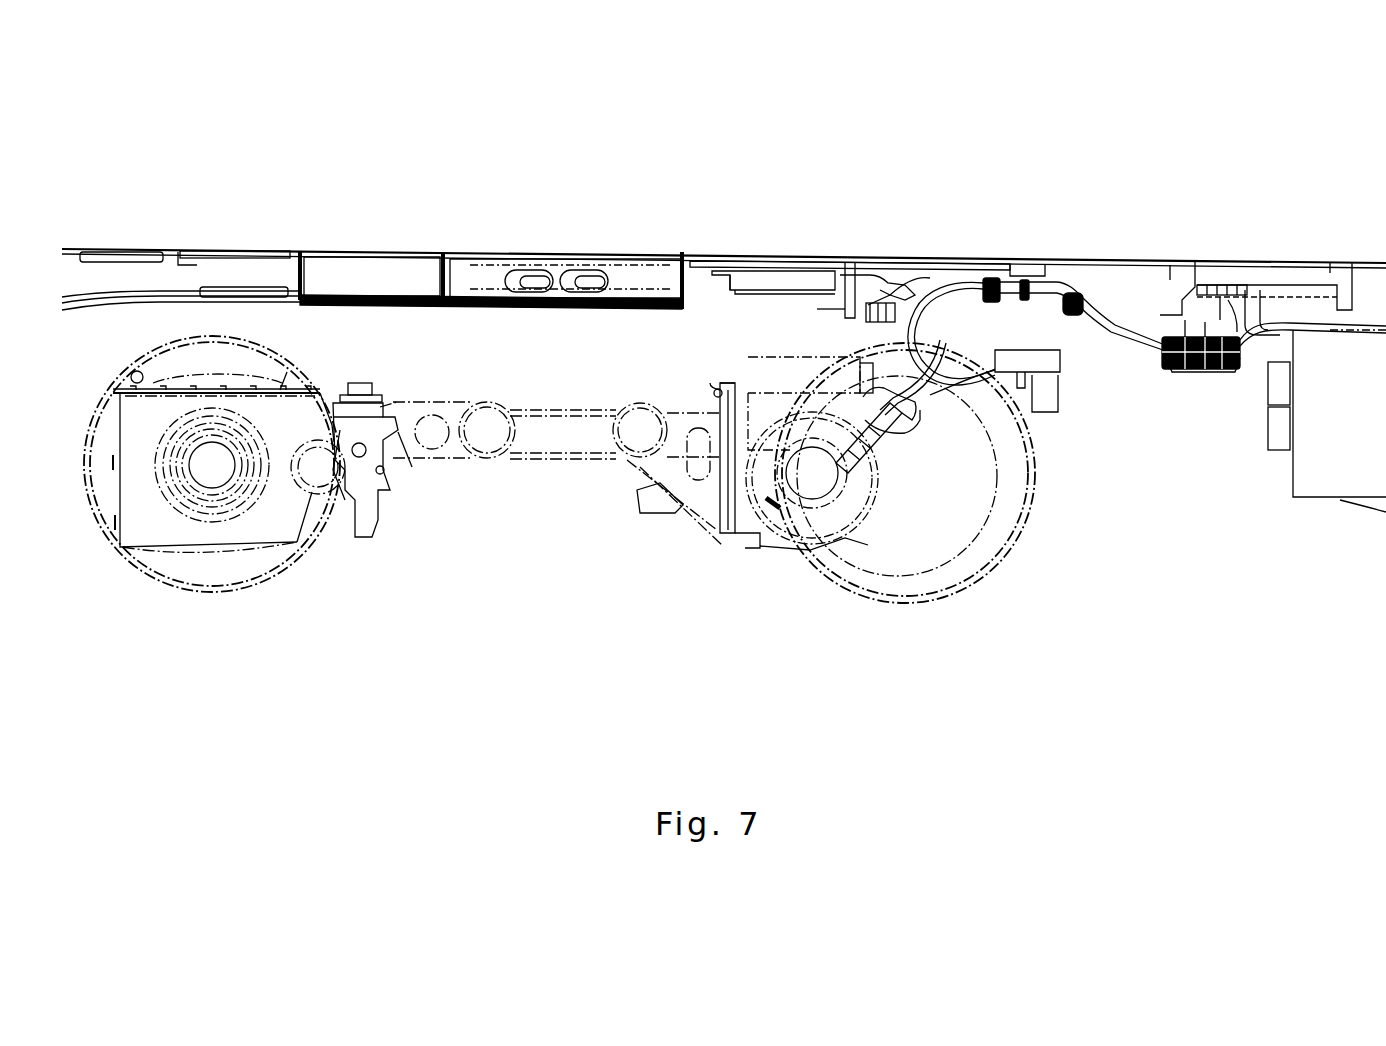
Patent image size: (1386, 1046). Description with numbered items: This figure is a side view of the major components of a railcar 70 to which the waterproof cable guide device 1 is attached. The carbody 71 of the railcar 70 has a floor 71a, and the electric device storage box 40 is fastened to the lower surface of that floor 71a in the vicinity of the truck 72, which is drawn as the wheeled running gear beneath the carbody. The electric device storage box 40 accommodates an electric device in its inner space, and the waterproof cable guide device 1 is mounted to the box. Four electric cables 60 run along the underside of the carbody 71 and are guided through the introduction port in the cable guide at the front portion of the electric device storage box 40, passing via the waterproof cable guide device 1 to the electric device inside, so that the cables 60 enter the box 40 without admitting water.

The railcar 70 is at (771, 255).
The carbody 71 is at (703, 256).
The floor 71a is at (888, 257).
The electric device storage box 40 is at (1202, 330).
The electric cables 60 is at (1114, 335).
The waterproof cable guide device 1 is at (1195, 372).
The truck 72 is at (752, 560).